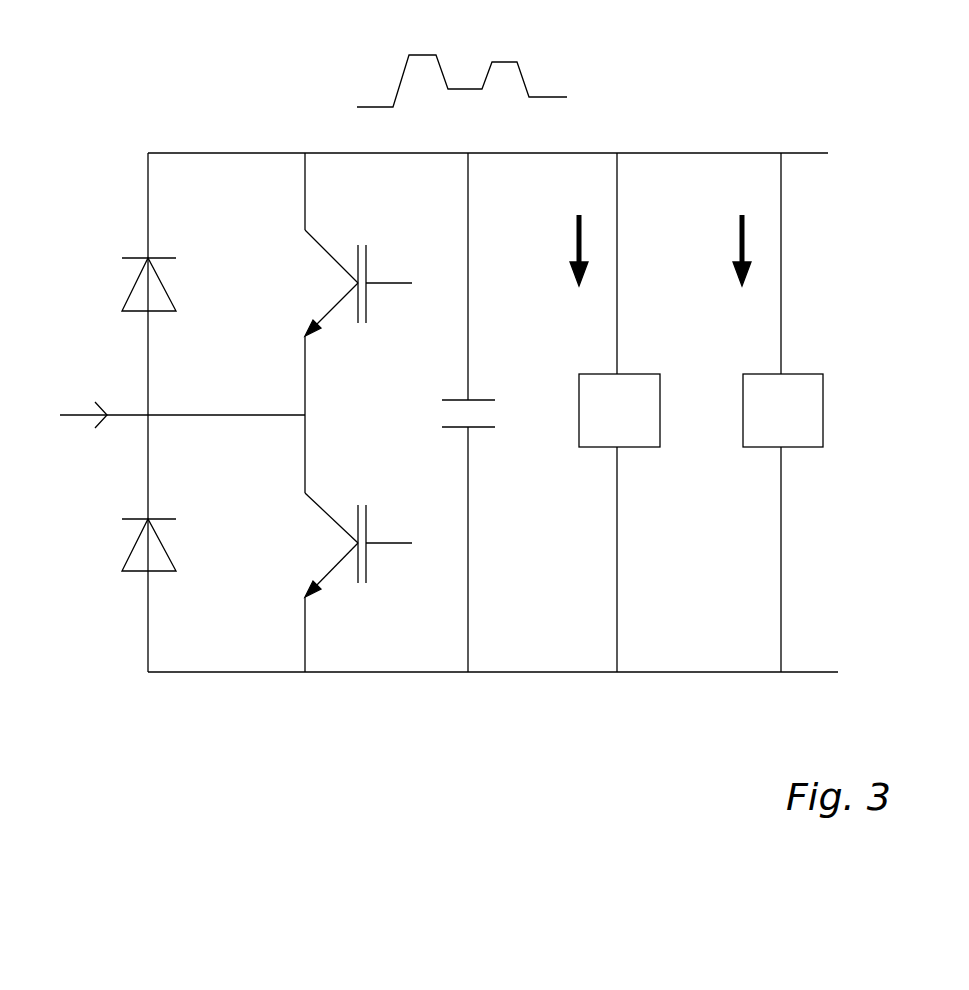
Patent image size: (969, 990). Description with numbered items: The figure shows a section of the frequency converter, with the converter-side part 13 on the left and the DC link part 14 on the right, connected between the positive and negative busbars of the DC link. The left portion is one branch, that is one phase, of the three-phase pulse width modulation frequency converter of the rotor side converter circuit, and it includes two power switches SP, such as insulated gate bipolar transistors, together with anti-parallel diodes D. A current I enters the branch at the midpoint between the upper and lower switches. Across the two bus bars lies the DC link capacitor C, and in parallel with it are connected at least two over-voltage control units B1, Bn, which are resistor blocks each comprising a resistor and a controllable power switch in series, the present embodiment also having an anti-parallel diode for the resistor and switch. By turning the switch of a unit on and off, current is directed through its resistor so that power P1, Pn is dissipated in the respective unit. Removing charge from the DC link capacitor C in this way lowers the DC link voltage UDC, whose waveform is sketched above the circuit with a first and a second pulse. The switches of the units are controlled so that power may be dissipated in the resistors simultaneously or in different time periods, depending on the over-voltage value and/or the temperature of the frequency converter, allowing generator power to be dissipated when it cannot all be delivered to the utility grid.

The converter / rectifier-inverter unit 13 is at (176, 128).
The DC load bus with loads 14 is at (598, 720).
The diodes D is at (127, 571).
The power switch SP is at (305, 590).
The DC link capacitor C is at (455, 427).
The input current I is at (182, 398).
The over-voltage control unit B1 is at (619, 412).
The over-voltage control unit Bn is at (783, 412).
The dissipated power P1 is at (568, 250).
The dissipated power Pn is at (730, 250).
The DC link voltage UDC is at (493, 91).